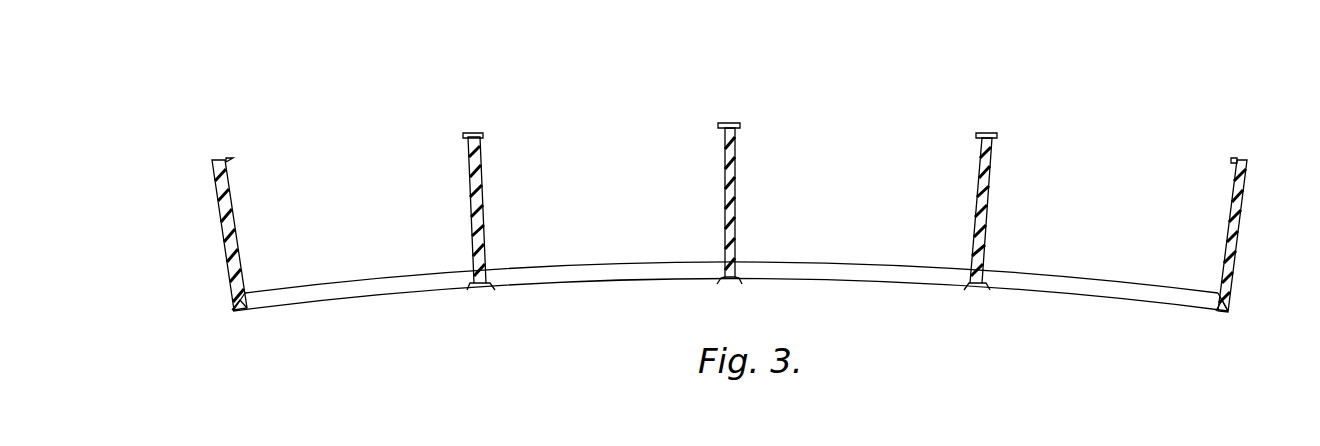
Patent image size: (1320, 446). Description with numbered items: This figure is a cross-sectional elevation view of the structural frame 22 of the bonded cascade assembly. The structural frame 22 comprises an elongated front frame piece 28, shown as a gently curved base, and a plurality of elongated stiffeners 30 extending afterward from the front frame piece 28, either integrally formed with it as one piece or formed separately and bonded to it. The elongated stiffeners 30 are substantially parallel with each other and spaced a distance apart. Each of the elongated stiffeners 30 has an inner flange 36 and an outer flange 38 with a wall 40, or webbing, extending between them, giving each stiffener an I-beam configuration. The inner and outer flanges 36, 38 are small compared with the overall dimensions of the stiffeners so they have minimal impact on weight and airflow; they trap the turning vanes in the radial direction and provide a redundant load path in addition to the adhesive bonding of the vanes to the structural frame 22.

The structural frame 22 is at (927, 88).
The front frame piece 28 is at (640, 272).
The elongated stiffeners 30 is at (213, 175).
The inner flange 36 is at (245, 300).
The outer flange 38 is at (226, 162).
The wall 40 is at (230, 212).